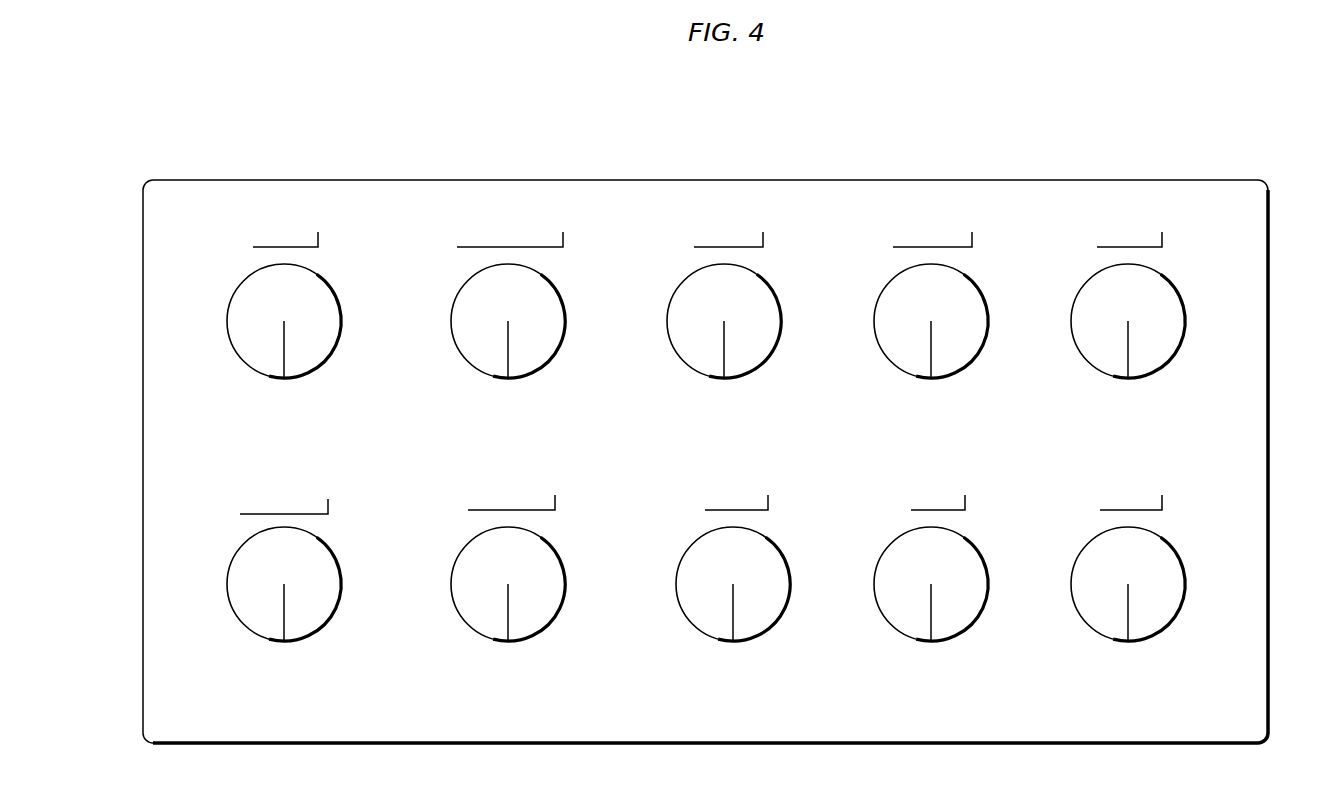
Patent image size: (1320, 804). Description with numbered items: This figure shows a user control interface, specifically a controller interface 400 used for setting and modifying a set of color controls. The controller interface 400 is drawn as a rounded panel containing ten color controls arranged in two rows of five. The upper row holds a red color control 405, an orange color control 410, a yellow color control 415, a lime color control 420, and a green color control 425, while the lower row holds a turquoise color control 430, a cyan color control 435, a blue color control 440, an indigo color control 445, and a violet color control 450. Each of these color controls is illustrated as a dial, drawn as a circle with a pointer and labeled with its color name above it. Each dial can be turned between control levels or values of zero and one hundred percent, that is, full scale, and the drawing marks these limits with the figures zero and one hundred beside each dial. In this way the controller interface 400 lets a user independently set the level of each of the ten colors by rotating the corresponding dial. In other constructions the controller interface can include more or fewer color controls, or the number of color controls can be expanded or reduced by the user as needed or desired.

The controller interface 400 is at (1043, 95).
The red color control 405 is at (257, 234).
The orange color control 410 is at (462, 234).
The yellow color control 415 is at (694, 234).
The lime color control 420 is at (905, 231).
The green color control 425 is at (1100, 231).
The turquoise color control 430 is at (240, 503).
The cyan color control 435 is at (470, 500).
The blue color control 440 is at (706, 500).
The indigo color control 445 is at (905, 497).
The violet color control 450 is at (1098, 500).